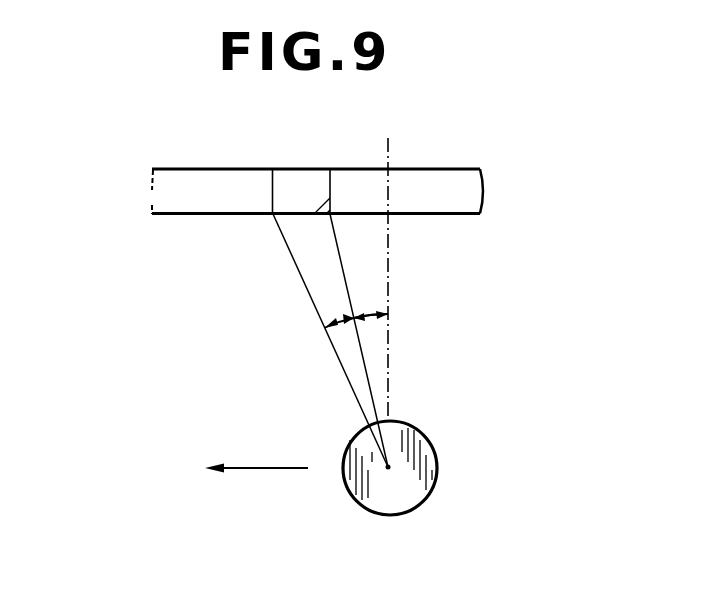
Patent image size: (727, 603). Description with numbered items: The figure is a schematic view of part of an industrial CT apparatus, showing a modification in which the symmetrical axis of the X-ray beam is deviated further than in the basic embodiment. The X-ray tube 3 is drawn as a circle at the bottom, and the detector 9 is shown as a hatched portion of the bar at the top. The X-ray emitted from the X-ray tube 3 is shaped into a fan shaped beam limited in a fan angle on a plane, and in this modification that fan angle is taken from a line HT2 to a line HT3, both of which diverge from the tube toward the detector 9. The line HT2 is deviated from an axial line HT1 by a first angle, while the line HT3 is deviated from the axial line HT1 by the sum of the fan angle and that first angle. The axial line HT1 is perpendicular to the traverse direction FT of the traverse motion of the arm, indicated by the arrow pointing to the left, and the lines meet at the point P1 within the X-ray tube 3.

The detector 9 is at (304, 169).
The X-ray tube 3 is at (436, 455).
The rotation center point P1 is at (388, 467).
The axial line HT1 is at (391, 338).
The line HT2 is at (368, 381).
The line HT3 is at (342, 367).
The traverse direction FT is at (256, 454).